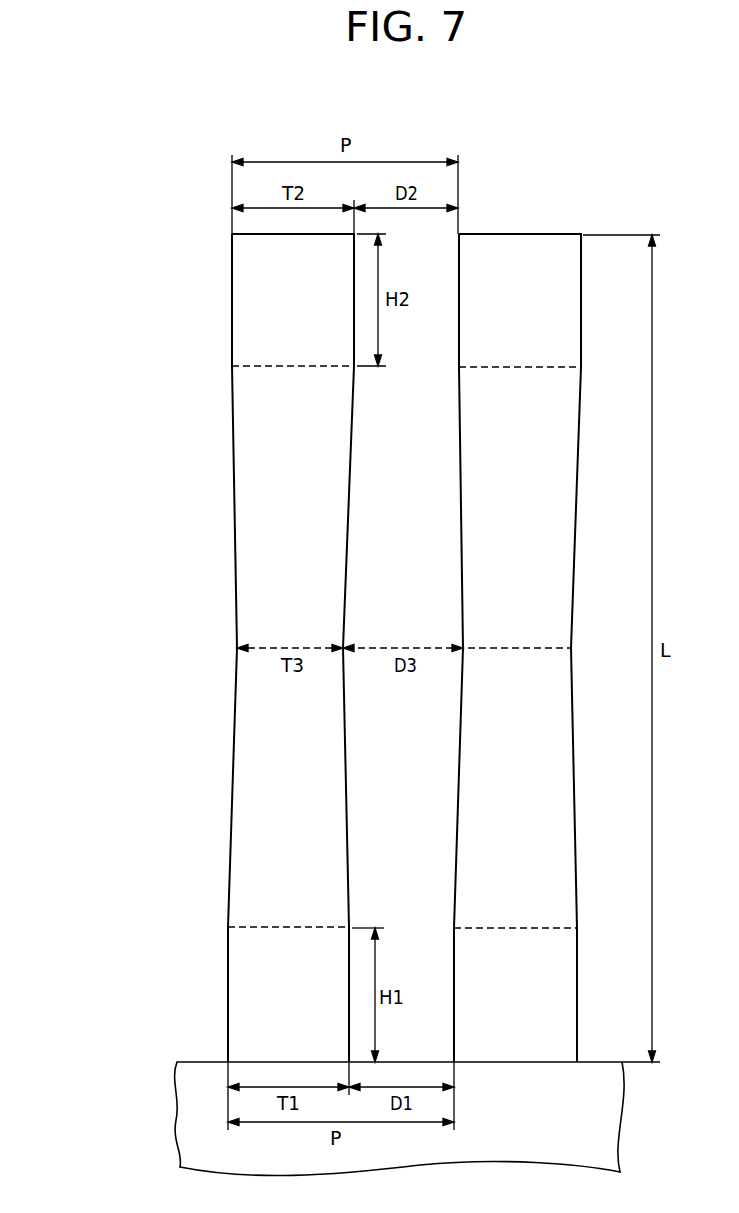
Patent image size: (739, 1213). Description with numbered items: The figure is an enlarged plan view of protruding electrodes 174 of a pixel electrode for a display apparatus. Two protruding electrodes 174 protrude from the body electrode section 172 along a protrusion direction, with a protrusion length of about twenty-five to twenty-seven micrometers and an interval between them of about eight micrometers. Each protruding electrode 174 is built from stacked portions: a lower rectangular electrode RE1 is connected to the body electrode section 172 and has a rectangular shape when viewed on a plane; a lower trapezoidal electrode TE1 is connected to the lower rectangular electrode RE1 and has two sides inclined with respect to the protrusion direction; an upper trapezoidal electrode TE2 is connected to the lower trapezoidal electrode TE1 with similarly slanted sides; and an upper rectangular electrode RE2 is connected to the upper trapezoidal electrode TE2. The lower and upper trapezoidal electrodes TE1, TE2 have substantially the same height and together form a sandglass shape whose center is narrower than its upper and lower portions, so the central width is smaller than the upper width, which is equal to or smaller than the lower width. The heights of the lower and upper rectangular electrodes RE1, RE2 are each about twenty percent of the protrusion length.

The body electrode section 172 is at (203, 1109).
The protruding electrode 174 is at (110, 1018).
The lower rectangular electrode RE1 is at (250, 1005).
The upper rectangular electrode RE2 is at (252, 316).
The lower trapezoidal electrode TE1 is at (252, 714).
The upper trapezoidal electrode TE2 is at (252, 575).